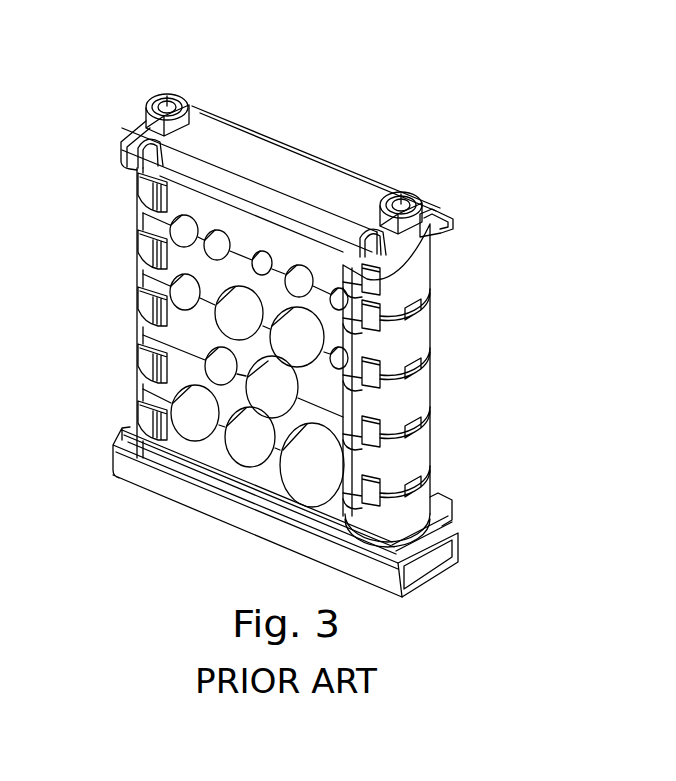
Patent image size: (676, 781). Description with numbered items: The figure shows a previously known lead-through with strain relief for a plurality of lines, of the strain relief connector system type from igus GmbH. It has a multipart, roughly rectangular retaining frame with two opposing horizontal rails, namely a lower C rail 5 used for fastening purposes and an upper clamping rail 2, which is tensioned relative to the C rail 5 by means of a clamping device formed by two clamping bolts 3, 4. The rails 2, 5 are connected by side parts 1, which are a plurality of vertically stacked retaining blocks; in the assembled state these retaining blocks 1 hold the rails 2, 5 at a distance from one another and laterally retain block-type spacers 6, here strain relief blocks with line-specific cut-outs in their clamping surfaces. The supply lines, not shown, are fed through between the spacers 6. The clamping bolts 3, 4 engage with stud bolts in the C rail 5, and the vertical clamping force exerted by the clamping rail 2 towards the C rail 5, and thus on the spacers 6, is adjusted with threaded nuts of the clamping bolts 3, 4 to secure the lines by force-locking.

The side parts 1 is at (413, 450).
The clamping rail 2 is at (263, 182).
The clamping bolt 3 is at (166, 100).
The clamping bolt 4 is at (400, 197).
The C rail 5 is at (168, 480).
The spacers 6 is at (222, 337).